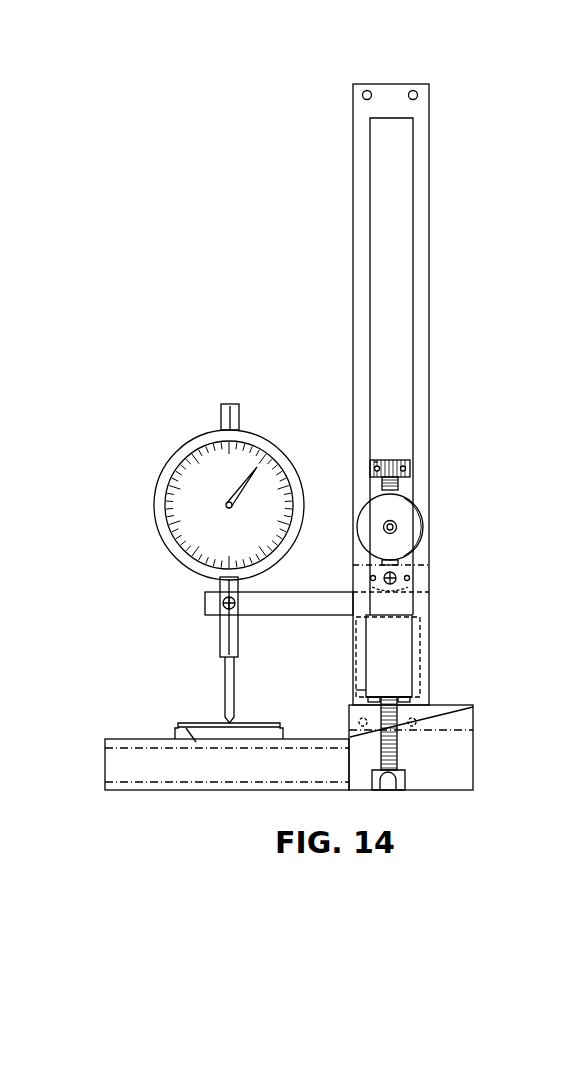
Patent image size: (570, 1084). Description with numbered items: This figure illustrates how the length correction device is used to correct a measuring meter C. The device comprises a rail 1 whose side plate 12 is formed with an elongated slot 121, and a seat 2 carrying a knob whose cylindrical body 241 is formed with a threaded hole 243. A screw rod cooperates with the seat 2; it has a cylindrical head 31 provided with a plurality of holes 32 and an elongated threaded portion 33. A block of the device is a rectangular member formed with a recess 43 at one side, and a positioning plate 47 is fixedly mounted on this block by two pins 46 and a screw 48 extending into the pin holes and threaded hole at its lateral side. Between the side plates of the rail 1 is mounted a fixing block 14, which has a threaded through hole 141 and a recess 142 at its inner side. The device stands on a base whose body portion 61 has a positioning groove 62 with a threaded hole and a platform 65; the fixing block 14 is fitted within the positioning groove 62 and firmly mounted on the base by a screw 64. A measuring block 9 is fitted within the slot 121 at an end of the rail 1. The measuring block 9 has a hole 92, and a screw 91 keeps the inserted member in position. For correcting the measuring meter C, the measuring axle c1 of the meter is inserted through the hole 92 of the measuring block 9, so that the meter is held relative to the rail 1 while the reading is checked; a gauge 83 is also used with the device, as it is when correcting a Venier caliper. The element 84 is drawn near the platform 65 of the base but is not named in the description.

The rail 1 is at (330, 160).
The side plate 12 is at (420, 243).
The elongated slot 121 is at (398, 172).
The seat 2 is at (343, 490).
The cylindrical head 31 is at (396, 462).
The holes 32 is at (376, 462).
The elongated threaded portion 33 is at (399, 483).
The cylindrical body 241 is at (421, 529).
The threaded hole 243 is at (387, 531).
The positioning plate 47 is at (410, 572).
The pin 46 is at (410, 583).
The screw 48 is at (370, 590).
The recess 43 is at (390, 590).
The measuring meter C is at (188, 455).
The hole 92 is at (220, 590).
The measuring axle c1 is at (226, 676).
The measuring block 9 is at (277, 607).
The screw 91 is at (222, 603).
The body portion 61 is at (118, 782).
The platform 65 is at (190, 737).
The step 84 is at (190, 733).
The positioning groove 62 is at (462, 720).
The fixing block 14 is at (349, 712).
The threaded through hole 141 is at (395, 697).
The recess 142 is at (357, 688).
The gauge 83 is at (395, 672).
The screw 64 is at (396, 758).